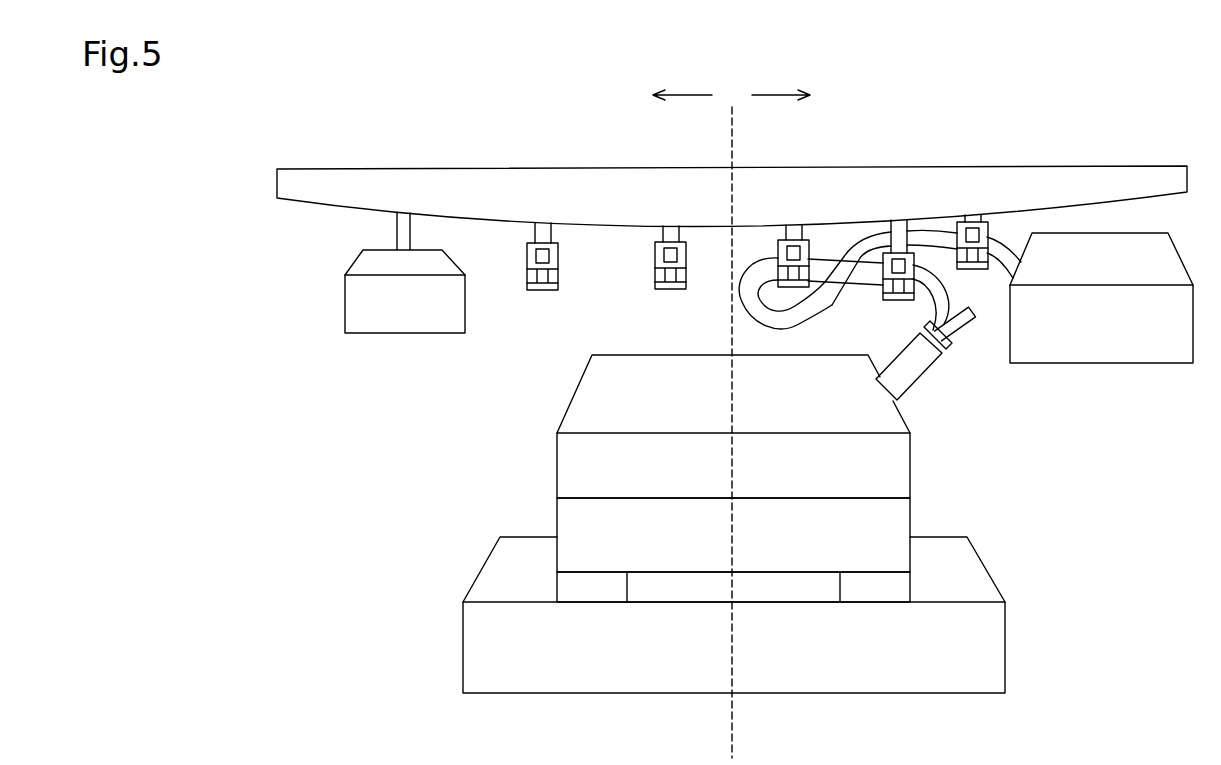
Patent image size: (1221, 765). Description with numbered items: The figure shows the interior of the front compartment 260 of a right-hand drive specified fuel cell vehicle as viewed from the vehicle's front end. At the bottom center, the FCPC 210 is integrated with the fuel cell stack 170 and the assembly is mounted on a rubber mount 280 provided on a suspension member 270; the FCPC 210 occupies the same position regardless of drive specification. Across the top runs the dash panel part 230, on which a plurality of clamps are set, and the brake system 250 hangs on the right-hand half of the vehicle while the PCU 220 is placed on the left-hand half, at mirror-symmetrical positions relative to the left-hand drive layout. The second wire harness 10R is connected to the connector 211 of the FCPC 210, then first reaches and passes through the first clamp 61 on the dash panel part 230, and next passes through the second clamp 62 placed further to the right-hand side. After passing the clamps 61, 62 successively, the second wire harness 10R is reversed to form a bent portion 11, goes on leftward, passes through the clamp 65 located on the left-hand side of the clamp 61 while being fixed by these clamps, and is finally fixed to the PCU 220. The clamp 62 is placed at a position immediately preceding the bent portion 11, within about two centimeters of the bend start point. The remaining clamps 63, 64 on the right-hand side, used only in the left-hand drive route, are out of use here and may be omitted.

The front compartment 260 is at (320, 114).
The dash panel part 230 is at (631, 167).
The brake system 250 is at (345, 307).
The clamp 64 is at (546, 292).
The clamp 63 is at (670, 292).
The second clamp 62 is at (793, 238).
The first clamp 61 is at (893, 302).
The clamp 65 is at (972, 222).
The second wire harness 10R is at (922, 228).
The bent portion 11 is at (742, 298).
The PCU 220 is at (1170, 365).
The FCPC 210 is at (557, 466).
The connector 211 is at (930, 375).
The fuel cell stack 170 is at (557, 517).
The rubber mount 280 is at (557, 585).
The suspension member 270 is at (463, 648).